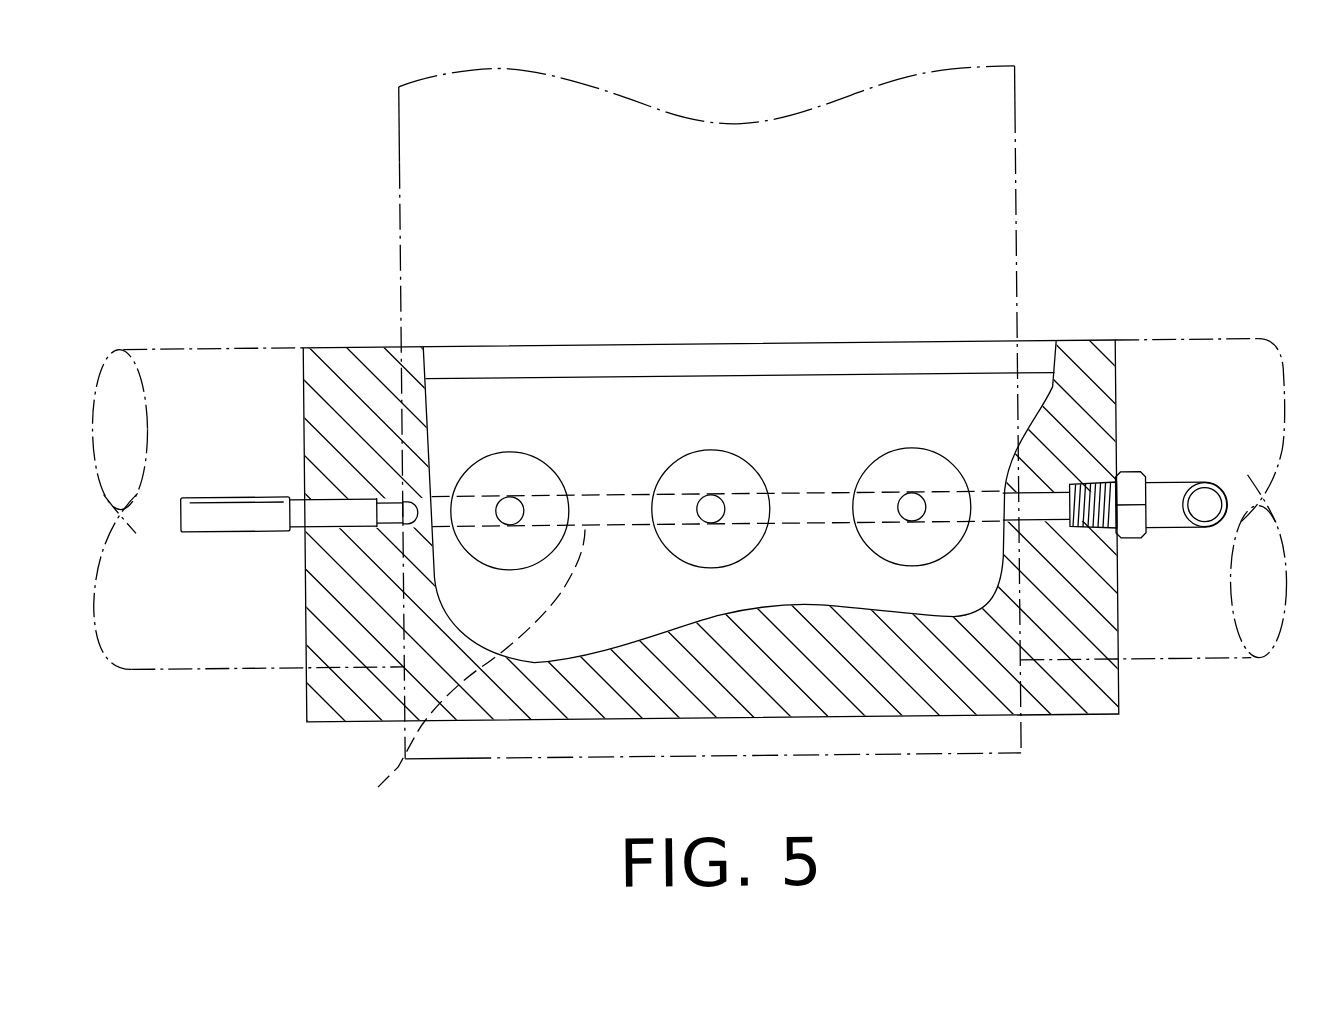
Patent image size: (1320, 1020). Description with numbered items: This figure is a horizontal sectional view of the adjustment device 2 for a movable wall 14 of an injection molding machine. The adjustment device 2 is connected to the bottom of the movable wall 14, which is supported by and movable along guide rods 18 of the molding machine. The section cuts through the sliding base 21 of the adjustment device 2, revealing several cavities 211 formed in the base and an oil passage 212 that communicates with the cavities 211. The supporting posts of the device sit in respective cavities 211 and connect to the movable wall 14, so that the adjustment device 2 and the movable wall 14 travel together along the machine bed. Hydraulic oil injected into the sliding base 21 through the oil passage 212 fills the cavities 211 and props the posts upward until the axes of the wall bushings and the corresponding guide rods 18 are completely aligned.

The adjustment device 2 is at (1112, 748).
The movable wall 14 is at (1021, 178).
The guide rod 18 is at (210, 343).
The sliding base 21 is at (305, 696).
The cavity 211 is at (514, 466).
The oil passage 212 is at (902, 514).